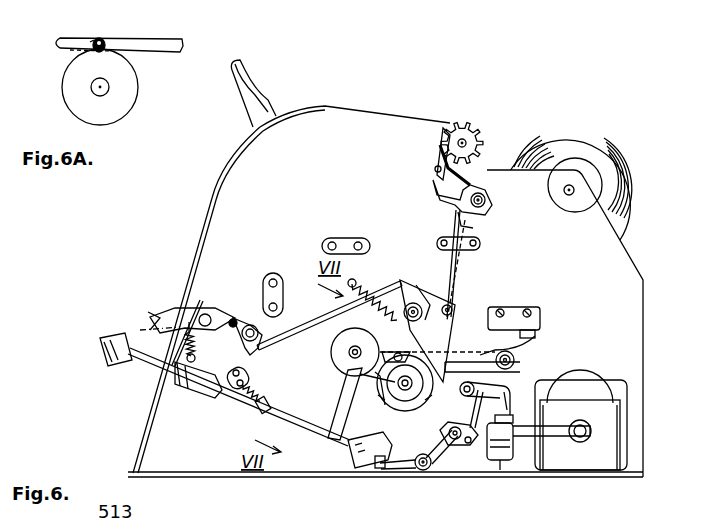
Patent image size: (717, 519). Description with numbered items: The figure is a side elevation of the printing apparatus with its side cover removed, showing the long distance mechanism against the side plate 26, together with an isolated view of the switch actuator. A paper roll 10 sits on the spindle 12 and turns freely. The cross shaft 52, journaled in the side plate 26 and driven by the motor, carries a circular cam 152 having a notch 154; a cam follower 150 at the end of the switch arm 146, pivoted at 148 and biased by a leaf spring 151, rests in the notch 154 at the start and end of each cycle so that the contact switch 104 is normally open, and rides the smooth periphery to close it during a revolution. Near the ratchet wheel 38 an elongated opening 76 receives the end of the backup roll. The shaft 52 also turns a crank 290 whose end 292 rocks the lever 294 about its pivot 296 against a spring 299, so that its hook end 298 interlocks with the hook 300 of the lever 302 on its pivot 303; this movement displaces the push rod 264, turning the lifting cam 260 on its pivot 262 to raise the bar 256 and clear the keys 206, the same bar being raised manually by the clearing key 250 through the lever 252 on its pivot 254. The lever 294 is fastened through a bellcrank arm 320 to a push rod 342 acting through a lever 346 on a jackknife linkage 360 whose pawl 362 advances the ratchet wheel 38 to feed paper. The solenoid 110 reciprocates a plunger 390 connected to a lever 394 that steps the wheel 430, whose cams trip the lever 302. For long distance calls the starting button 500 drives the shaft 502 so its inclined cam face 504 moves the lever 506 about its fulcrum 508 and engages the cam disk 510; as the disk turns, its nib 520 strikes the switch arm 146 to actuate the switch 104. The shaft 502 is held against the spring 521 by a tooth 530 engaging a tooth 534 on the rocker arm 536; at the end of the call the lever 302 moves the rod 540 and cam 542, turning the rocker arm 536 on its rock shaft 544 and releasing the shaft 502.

In FIG. 6, the reel 10 is at (632, 162).
In FIG. 6, the spindle 12 is at (569, 196).
In FIG. 6, the side plate 26 is at (296, 187).
In FIG. 6, the ratchet wheel 38 is at (455, 122).
In FIG. 6A, the cross shaft 52 is at (109, 87).
In FIG. 6, the cross shaft 52 is at (410, 392).
In FIG. 6, the elongated opening 76 is at (482, 245).
In FIG. 6, the contact switch 104 is at (540, 310).
In FIG. 6, the solenoid 110 is at (630, 442).
In FIG. 6A, the switch arm 146 is at (152, 38).
In FIG. 6, the switch arm 146 is at (458, 362).
In FIG. 6, the pivot 148 is at (515, 361).
In FIG. 6A, the cam follower 150 is at (102, 38).
In FIG. 6, the cam follower 150 is at (398, 352).
In FIG. 6, the leaf spring 151 is at (532, 344).
In FIG. 6A, the circular cam 152 is at (75, 104).
In FIG. 6, the circular cam 152 is at (400, 410).
In FIG. 6A, the notch 154 is at (94, 40).
In FIG. 6, the key 206 is at (248, 65).
In FIG. 6, the clearing key 250 is at (158, 316).
In FIG. 6, the lever 252 is at (178, 308).
In FIG. 6, the pivot 254 is at (208, 300).
In FIG. 6, the bar 256 is at (234, 318).
In FIG. 6, the lifting cam 260 is at (240, 340).
In FIG. 6, the pivot 262 is at (282, 307).
In FIG. 6, the push rod 264 is at (262, 347).
In FIG. 6, the crank 290 is at (384, 402).
In FIG. 6, the end 292 is at (372, 394).
In FIG. 6, the lever 294 is at (418, 302).
In FIG. 6, the pivot 296 is at (428, 300).
In FIG. 6, the hook end 298 is at (455, 330).
In FIG. 6, the spring 299 is at (375, 290).
In FIG. 6, the hook 300 is at (462, 388).
In FIG. 6, the lever 302 is at (510, 406).
In FIG. 6, the pivot 303 is at (460, 422).
In FIG. 6, the bellcrank arm 320 is at (458, 270).
In FIG. 6, the push rod 342 is at (470, 260).
In FIG. 6, the lever 346 is at (478, 224).
In FIG. 6, the jackknife linkage 360 is at (430, 198).
In FIG. 6, the pawl 362 is at (425, 150).
In FIG. 6, the plunger 390 is at (592, 428).
In FIG. 6, the lever 394 is at (548, 440).
In FIG. 6, the wheel 430 is at (512, 462).
In FIG. 6, the starting button 500 is at (100, 342).
In FIG. 6, the shaft 502 is at (222, 399).
In FIG. 6, the inclined cam face 504 is at (318, 432).
In FIG. 6, the lever 506 is at (345, 402).
In FIG. 6, the fulcrum 508 is at (338, 364).
In FIG. 6, the cam disk 510 is at (345, 320).
In FIG. 6, the nib 520 is at (362, 345).
In FIG. 6, the spring 521 is at (240, 402).
In FIG. 6, the tooth 530 is at (366, 470).
In FIG. 6, the tooth 534 is at (386, 476).
In FIG. 6, the rocker arm 536 is at (388, 470).
In FIG. 6, the rod 540 is at (480, 448).
In FIG. 6, the cam 542 is at (455, 450).
In FIG. 6, the rock shaft 544 is at (428, 474).